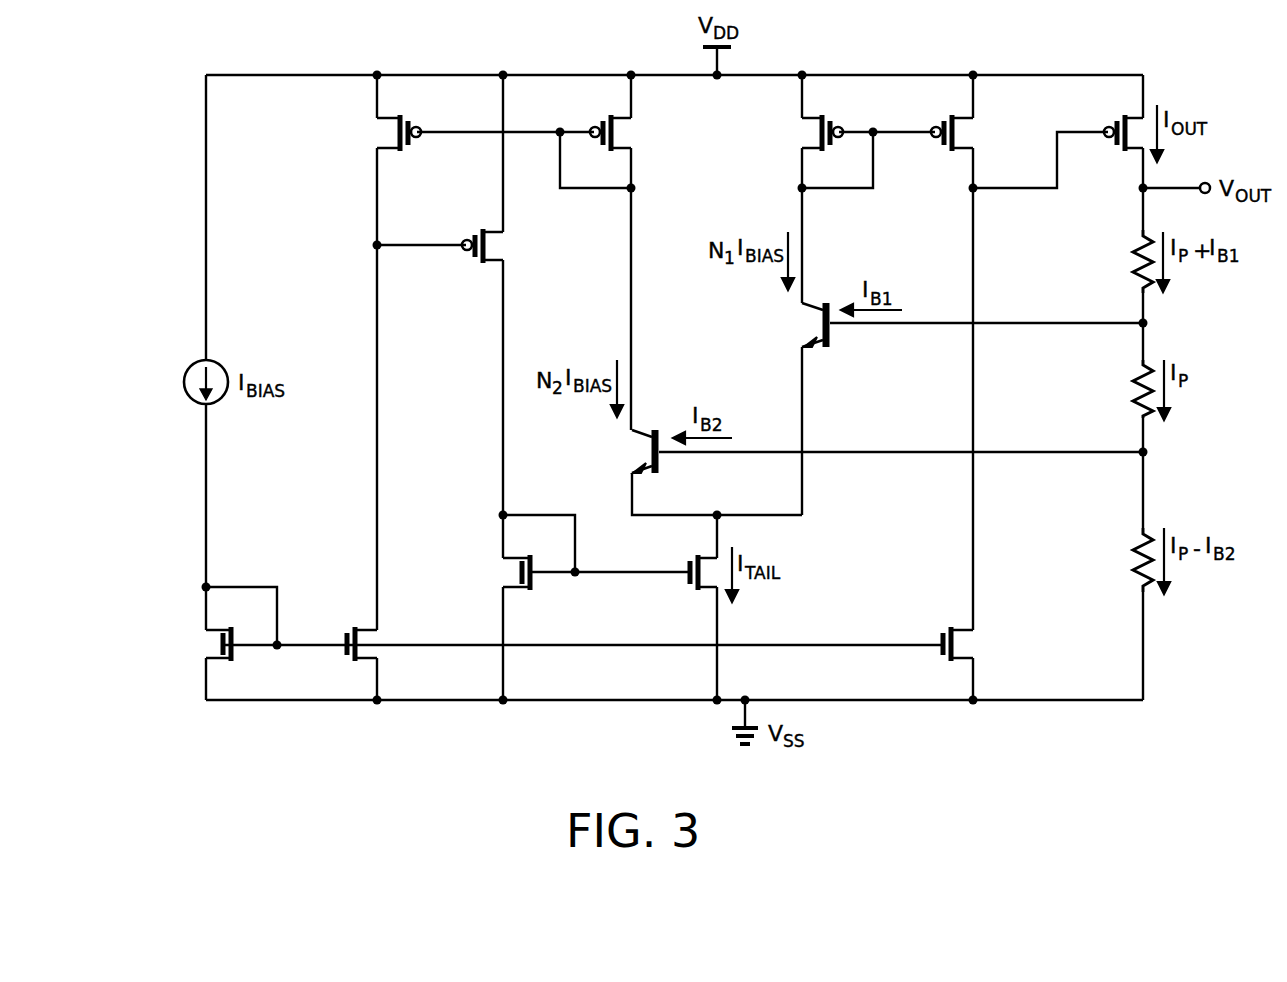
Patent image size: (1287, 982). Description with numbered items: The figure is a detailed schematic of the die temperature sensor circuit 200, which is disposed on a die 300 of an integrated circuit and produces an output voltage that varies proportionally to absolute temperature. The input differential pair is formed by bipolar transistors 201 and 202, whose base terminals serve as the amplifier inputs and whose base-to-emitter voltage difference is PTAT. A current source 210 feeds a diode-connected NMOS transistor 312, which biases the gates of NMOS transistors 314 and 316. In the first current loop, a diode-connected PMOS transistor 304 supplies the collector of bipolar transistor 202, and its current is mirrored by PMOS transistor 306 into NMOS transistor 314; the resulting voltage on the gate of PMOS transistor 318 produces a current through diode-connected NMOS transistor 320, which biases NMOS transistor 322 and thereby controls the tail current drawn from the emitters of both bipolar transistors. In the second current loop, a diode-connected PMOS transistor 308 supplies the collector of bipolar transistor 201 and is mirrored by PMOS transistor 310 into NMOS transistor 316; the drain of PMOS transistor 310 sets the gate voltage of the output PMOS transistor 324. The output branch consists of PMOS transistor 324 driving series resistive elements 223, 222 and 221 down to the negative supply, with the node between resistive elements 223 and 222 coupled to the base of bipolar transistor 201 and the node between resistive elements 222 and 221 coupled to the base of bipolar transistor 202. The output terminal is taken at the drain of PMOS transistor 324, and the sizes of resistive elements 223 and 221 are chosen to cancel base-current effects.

The die temperature sensor circuit 200 is at (606, 779).
The die 300 is at (691, 779).
The bipolar transistor 201 is at (820, 324).
The bipolar transistor 202 is at (649, 453).
The current source 210 is at (186, 372).
The resistive element 221 is at (1133, 563).
The resistive element 222 is at (1133, 392).
The resistive element 223 is at (1133, 262).
The PMOS transistor 304 is at (616, 134).
The PMOS transistor 306 is at (394, 133).
The PMOS transistor 308 is at (818, 132).
The PMOS transistor 310 is at (957, 134).
The NMOS transistor 312 is at (220, 644).
The NMOS transistor 314 is at (346, 637).
The NMOS transistor 316 is at (958, 645).
The PMOS transistor 318 is at (488, 247).
The NMOS transistor 320 is at (519, 573).
The NMOS transistor 322 is at (692, 587).
The PMOS transistor 324 is at (1114, 149).